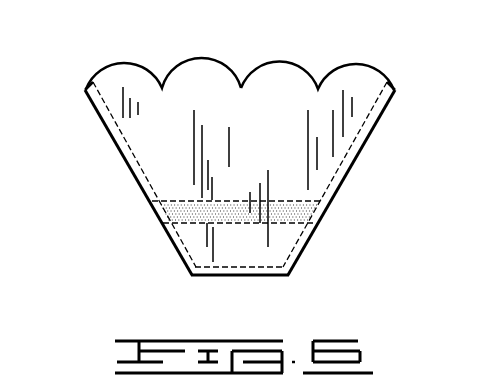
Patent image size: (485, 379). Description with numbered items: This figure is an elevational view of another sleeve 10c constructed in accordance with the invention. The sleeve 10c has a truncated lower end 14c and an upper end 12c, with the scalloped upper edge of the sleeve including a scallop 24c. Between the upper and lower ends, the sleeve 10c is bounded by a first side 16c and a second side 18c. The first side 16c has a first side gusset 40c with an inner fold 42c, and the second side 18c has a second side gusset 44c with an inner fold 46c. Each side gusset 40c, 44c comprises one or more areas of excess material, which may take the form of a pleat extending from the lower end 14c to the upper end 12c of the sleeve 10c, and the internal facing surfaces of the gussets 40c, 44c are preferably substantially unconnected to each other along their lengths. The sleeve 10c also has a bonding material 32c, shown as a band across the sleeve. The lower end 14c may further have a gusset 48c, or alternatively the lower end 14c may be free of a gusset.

The sleeve 10c is at (242, 166).
The upper end 12c is at (183, 63).
The truncated lower end 14c is at (218, 277).
The first side 16c is at (108, 129).
The second side 18c is at (368, 138).
The scallop 24c is at (282, 62).
The bonding material 32c is at (177, 200).
The first side gusset 40c is at (128, 164).
The inner fold 42c is at (97, 98).
The second side gusset 44c is at (353, 167).
The inner fold 46c is at (381, 107).
The gusset 48c is at (272, 267).